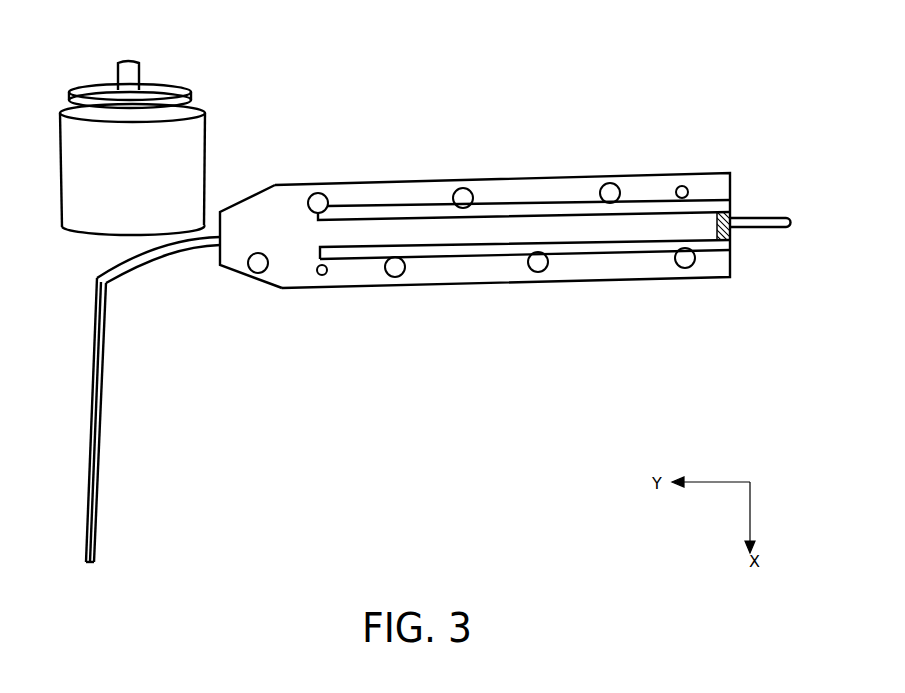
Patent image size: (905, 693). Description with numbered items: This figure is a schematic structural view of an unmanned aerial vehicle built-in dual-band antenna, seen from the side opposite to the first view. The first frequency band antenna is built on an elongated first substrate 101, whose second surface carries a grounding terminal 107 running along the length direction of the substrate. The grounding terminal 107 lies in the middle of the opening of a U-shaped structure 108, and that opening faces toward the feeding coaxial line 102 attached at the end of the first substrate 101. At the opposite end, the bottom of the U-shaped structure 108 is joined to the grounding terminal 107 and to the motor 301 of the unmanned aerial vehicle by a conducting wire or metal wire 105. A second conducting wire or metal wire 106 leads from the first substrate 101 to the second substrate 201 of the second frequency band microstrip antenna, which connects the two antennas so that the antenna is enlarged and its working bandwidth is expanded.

The motor 301 is at (190, 165).
The conducting wire or metal wire 105 is at (208, 213).
The first substrate 101 is at (608, 280).
The grounding terminal 107 is at (345, 228).
The U-shaped structure 108 is at (532, 187).
The feeding coaxial line 102 is at (752, 227).
The conducting wire or metal wire 106 is at (158, 248).
The second substrate 201 is at (97, 457).